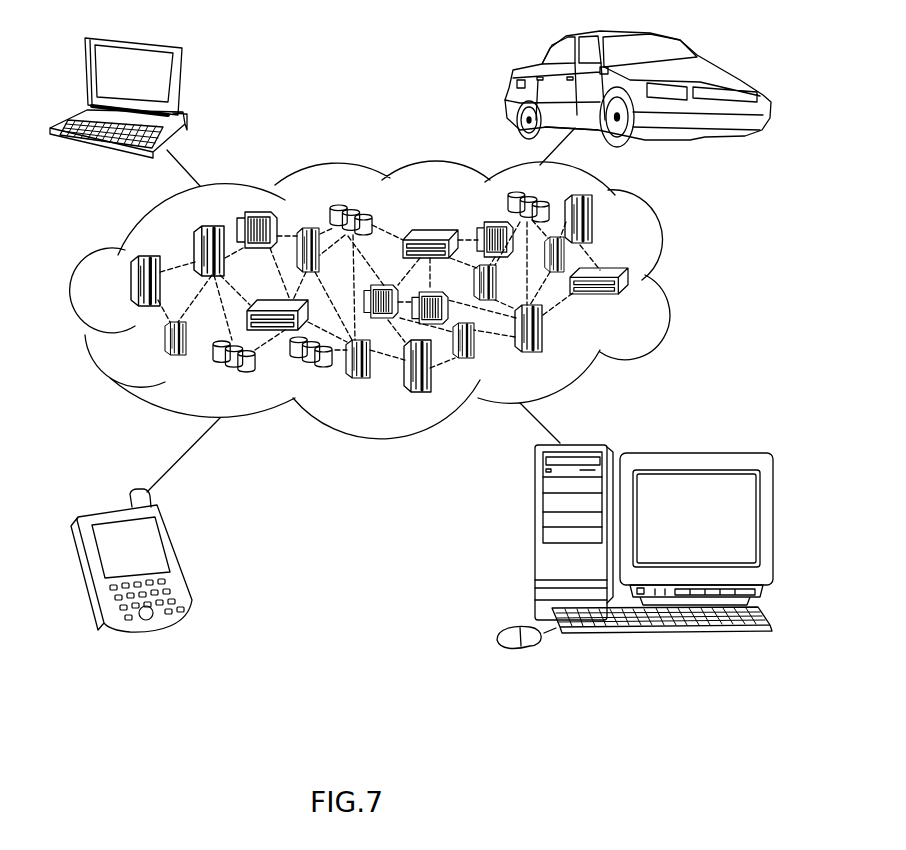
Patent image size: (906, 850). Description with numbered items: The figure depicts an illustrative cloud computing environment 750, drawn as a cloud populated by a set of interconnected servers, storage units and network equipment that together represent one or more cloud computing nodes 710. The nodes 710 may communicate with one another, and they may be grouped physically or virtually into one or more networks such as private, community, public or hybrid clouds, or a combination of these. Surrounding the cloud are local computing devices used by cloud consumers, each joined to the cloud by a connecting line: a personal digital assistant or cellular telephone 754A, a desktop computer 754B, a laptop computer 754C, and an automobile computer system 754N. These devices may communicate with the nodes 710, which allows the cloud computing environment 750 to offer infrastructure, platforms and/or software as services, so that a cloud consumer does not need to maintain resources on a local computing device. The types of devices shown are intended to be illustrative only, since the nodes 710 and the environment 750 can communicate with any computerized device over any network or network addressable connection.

The cloud computing nodes 710 is at (655, 303).
The cloud computing environment 750 is at (667, 248).
The personal digital assistant (PDA) or cellular telephone 754A is at (173, 556).
The desktop computer 754B is at (535, 540).
The laptop computer 754C is at (183, 80).
The automobile computer system 754N is at (512, 84).